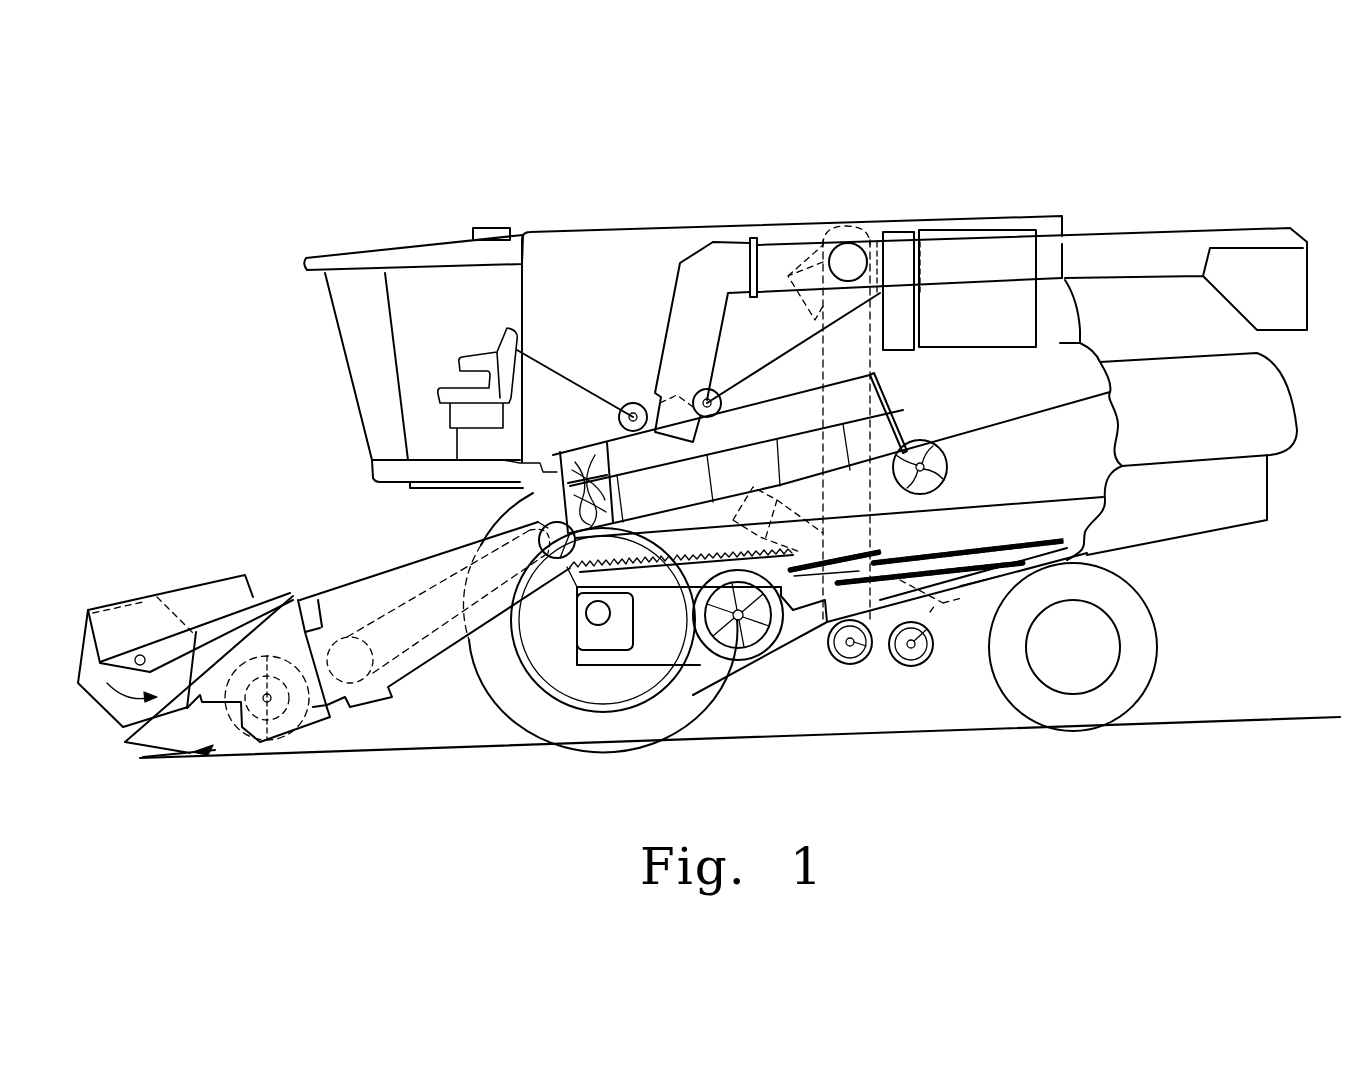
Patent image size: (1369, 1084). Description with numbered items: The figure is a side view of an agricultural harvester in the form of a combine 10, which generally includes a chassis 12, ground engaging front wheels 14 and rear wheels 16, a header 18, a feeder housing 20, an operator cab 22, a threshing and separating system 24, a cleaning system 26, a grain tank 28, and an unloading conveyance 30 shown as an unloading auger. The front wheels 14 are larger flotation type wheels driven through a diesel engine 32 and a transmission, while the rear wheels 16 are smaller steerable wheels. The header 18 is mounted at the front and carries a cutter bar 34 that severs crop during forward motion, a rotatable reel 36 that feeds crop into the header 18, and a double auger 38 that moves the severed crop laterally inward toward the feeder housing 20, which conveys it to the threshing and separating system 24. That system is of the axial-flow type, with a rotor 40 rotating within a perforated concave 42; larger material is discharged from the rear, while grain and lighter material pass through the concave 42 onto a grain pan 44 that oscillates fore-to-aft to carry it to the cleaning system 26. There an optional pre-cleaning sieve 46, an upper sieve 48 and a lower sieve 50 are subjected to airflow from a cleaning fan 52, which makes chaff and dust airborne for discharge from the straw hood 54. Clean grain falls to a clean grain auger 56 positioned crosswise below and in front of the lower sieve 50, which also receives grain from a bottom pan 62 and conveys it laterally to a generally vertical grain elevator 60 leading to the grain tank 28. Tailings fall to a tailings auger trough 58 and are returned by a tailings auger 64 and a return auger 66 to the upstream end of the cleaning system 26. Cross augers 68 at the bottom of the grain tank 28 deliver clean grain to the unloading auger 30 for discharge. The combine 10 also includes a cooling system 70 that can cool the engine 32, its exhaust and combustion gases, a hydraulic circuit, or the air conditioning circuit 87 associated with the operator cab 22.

The combine 10 is at (403, 228).
The chassis 12 is at (1087, 555).
The front wheels 14 is at (503, 700).
The rear wheels 16 is at (1152, 663).
The header 18 is at (173, 578).
The feeder housing 20 is at (388, 573).
The operator cab 22 is at (341, 347).
The threshing and separating system 24 is at (500, 505).
The cleaning system 26 is at (815, 661).
The grain tank 28 is at (587, 235).
The unloading conveyance 30 is at (1158, 240).
The diesel engine 32 is at (965, 232).
The cutter bar 34 is at (192, 757).
The rotatable reel 36 is at (90, 655).
The double auger 38 is at (270, 727).
The rotor 40 is at (588, 466).
The perforated concave 42 is at (771, 428).
The grain pan 44 is at (570, 582).
The pre-cleaning sieve 46 is at (889, 552).
The upper sieve 48 is at (987, 542).
The lower sieve 50 is at (953, 580).
The cleaning fan 52 is at (743, 640).
The straw hood 54 is at (1277, 397).
The clean grain auger 56 is at (852, 664).
The tailings auger trough 58 is at (982, 587).
The grain elevator 60 is at (877, 360).
The bottom pan 62 is at (982, 590).
The tailings auger 64 is at (909, 666).
The return auger 66 is at (808, 537).
The cross augers 68 is at (634, 402).
The cooling system 70 is at (892, 230).
The air conditioning circuit 87 is at (494, 227).